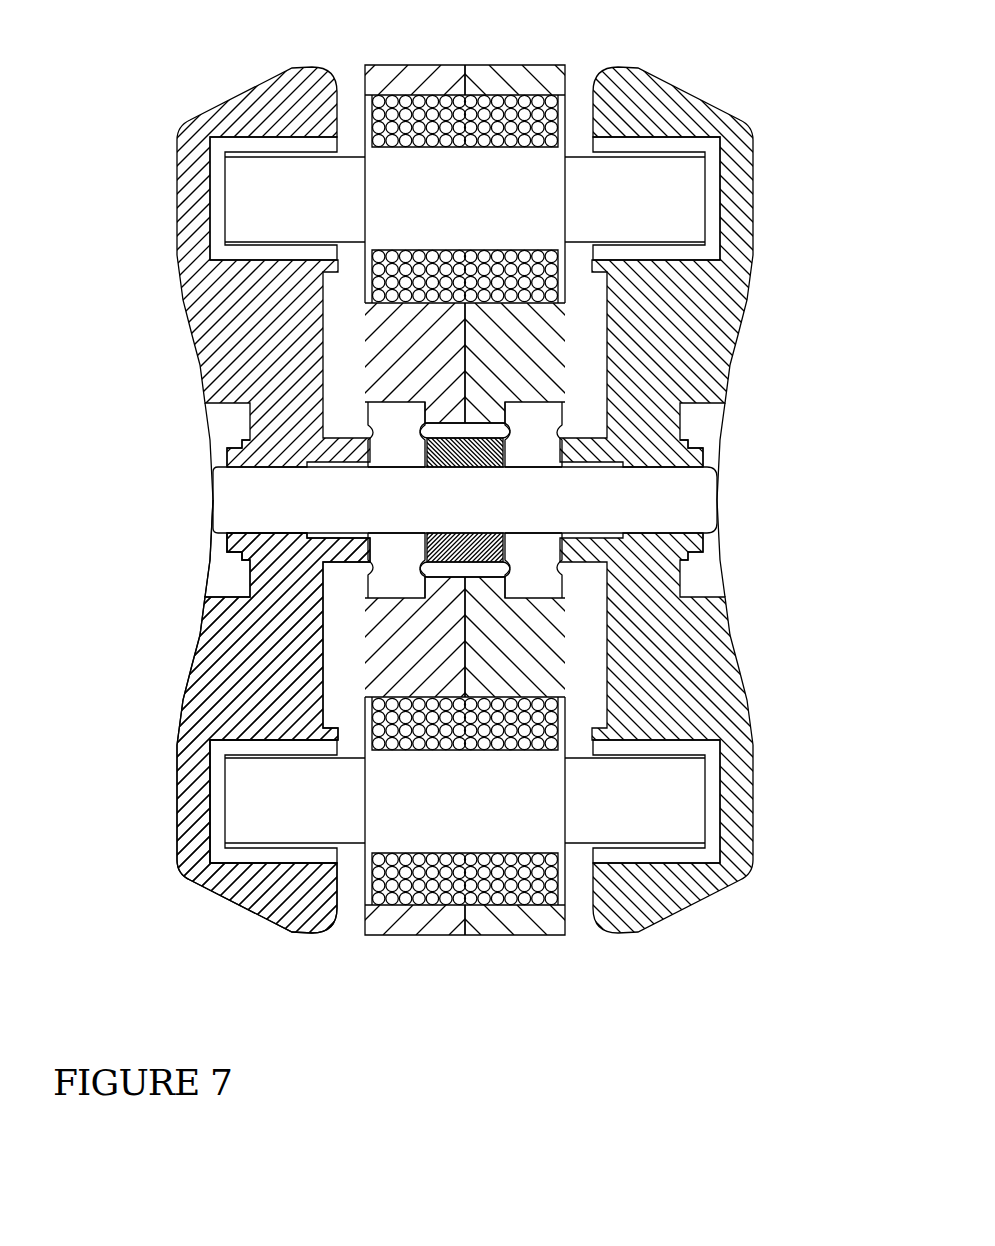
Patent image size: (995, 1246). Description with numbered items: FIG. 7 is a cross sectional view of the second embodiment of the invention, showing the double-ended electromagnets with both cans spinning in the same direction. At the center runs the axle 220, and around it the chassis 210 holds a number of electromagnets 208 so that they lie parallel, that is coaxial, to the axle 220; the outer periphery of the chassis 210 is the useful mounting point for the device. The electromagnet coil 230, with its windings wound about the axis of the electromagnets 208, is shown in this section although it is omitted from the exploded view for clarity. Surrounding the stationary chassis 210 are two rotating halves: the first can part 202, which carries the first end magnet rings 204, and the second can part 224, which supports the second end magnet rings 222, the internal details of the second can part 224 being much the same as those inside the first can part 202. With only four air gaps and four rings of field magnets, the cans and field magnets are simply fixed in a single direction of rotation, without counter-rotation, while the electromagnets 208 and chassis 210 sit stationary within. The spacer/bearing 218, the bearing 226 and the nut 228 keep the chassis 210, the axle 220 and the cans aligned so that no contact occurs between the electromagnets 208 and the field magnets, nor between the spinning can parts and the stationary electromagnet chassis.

The first can part 202 is at (653, 887).
The first end magnet rings 204 is at (688, 140).
The electromagnets 208 is at (582, 805).
The chassis 210 is at (425, 915).
The spacer/bearing 218 is at (427, 540).
The axle 220 is at (242, 490).
The second end magnet rings 222 is at (250, 147).
The second can part 224 is at (223, 713).
The bearing 226 is at (537, 440).
The nut 228 is at (693, 543).
The electromagnet coil 230 is at (507, 915).